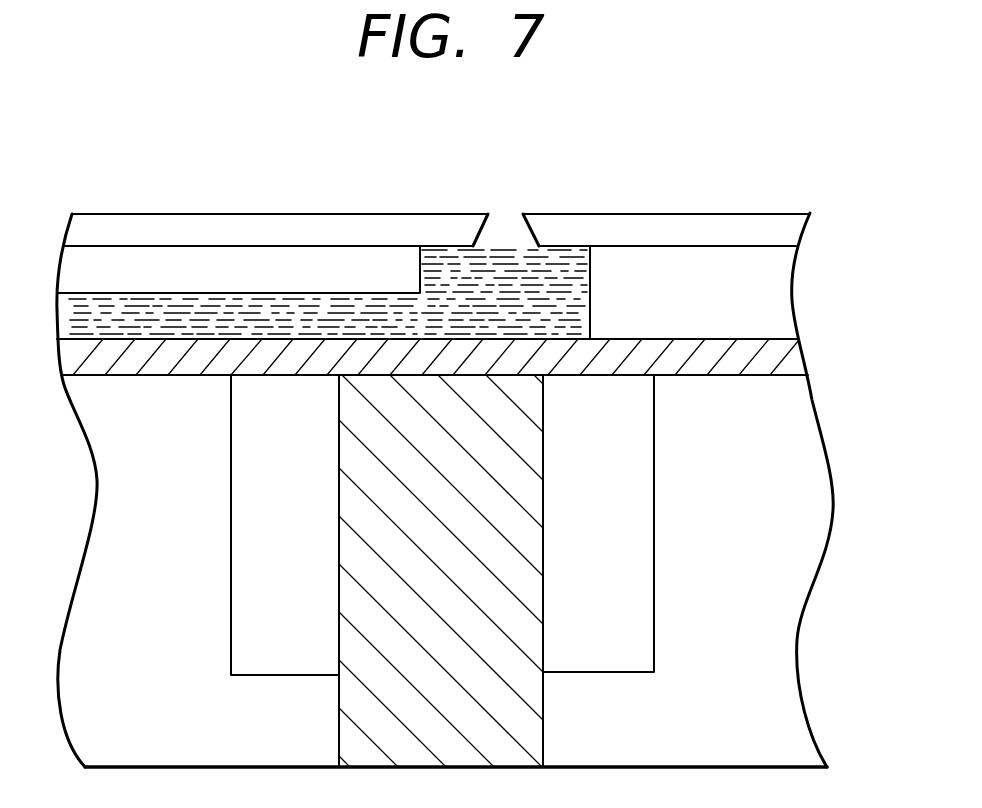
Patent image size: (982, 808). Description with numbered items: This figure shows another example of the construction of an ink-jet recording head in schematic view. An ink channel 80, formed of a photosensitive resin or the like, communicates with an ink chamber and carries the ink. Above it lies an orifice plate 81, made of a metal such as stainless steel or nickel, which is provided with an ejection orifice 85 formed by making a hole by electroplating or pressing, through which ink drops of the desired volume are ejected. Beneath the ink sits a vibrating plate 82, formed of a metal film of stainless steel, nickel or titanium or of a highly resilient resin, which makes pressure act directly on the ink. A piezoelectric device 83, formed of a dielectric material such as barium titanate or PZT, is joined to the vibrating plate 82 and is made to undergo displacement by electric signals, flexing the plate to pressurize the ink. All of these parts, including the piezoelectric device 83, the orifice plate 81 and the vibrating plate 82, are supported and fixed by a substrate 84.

The ink channel 80 is at (281, 258).
The orifice plate 81 is at (668, 221).
The vibrating plate 82 is at (765, 352).
The piezoelectric device 83 is at (528, 728).
The substrate 84 is at (647, 475).
The ejection orifice 85 is at (520, 224).